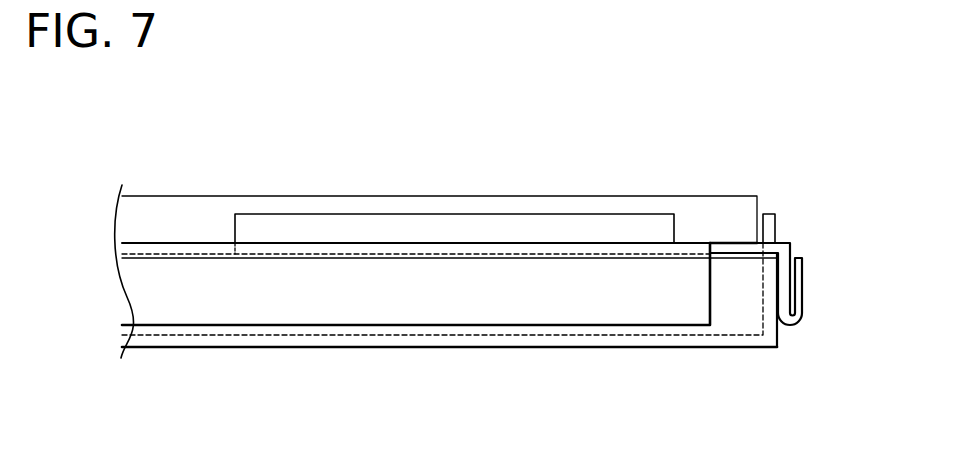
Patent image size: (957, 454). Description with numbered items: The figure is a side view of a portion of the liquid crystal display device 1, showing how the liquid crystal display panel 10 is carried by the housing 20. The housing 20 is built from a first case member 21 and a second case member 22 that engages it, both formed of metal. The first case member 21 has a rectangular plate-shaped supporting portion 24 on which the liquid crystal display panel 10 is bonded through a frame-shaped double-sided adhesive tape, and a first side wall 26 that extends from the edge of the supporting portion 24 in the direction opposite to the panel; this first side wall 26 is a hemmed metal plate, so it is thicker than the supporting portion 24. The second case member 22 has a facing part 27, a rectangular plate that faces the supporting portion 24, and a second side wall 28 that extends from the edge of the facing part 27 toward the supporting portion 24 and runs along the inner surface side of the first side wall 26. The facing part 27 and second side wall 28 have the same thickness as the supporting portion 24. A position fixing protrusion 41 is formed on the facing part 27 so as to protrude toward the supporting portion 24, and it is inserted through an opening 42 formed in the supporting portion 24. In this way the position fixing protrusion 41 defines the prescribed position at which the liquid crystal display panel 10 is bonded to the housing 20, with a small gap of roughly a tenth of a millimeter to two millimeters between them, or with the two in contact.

The liquid crystal display device 1 is at (444, 94).
The liquid crystal display panel 10 is at (217, 207).
The housing 20 is at (350, 211).
The first case member 21 is at (168, 239).
The second case member 22 is at (212, 352).
The supporting portion 24 is at (728, 241).
The first side wall 26 is at (608, 299).
The facing part 27 is at (410, 341).
The second side wall 28 is at (513, 333).
The position fixing protrusion 41 is at (512, 221).
The opening 42 is at (673, 247).